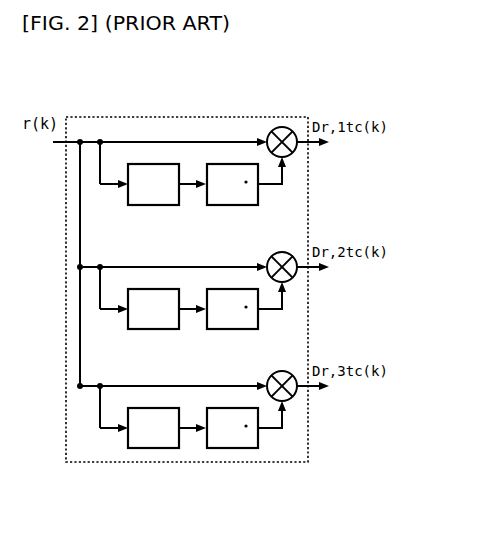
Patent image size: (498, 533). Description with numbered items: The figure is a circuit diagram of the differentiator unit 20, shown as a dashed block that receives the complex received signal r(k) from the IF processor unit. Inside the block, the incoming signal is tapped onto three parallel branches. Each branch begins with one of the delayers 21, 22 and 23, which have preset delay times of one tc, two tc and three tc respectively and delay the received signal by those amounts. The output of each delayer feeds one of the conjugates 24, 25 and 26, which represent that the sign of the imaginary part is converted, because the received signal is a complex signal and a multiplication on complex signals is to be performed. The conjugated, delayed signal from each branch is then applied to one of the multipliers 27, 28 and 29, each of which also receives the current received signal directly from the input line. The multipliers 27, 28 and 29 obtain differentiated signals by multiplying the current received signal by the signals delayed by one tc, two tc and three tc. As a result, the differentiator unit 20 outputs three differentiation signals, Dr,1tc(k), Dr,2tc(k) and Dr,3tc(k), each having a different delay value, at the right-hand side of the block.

The differentiator unit 20 is at (186, 116).
The delayer 21 is at (153, 205).
The delayer 22 is at (153, 329).
The delayer 23 is at (153, 448).
The conjugate 24 is at (230, 205).
The conjugate 25 is at (230, 329).
The conjugate 26 is at (230, 448).
The multiplier 27 is at (292, 152).
The multiplier 28 is at (292, 277).
The multiplier 29 is at (292, 396).